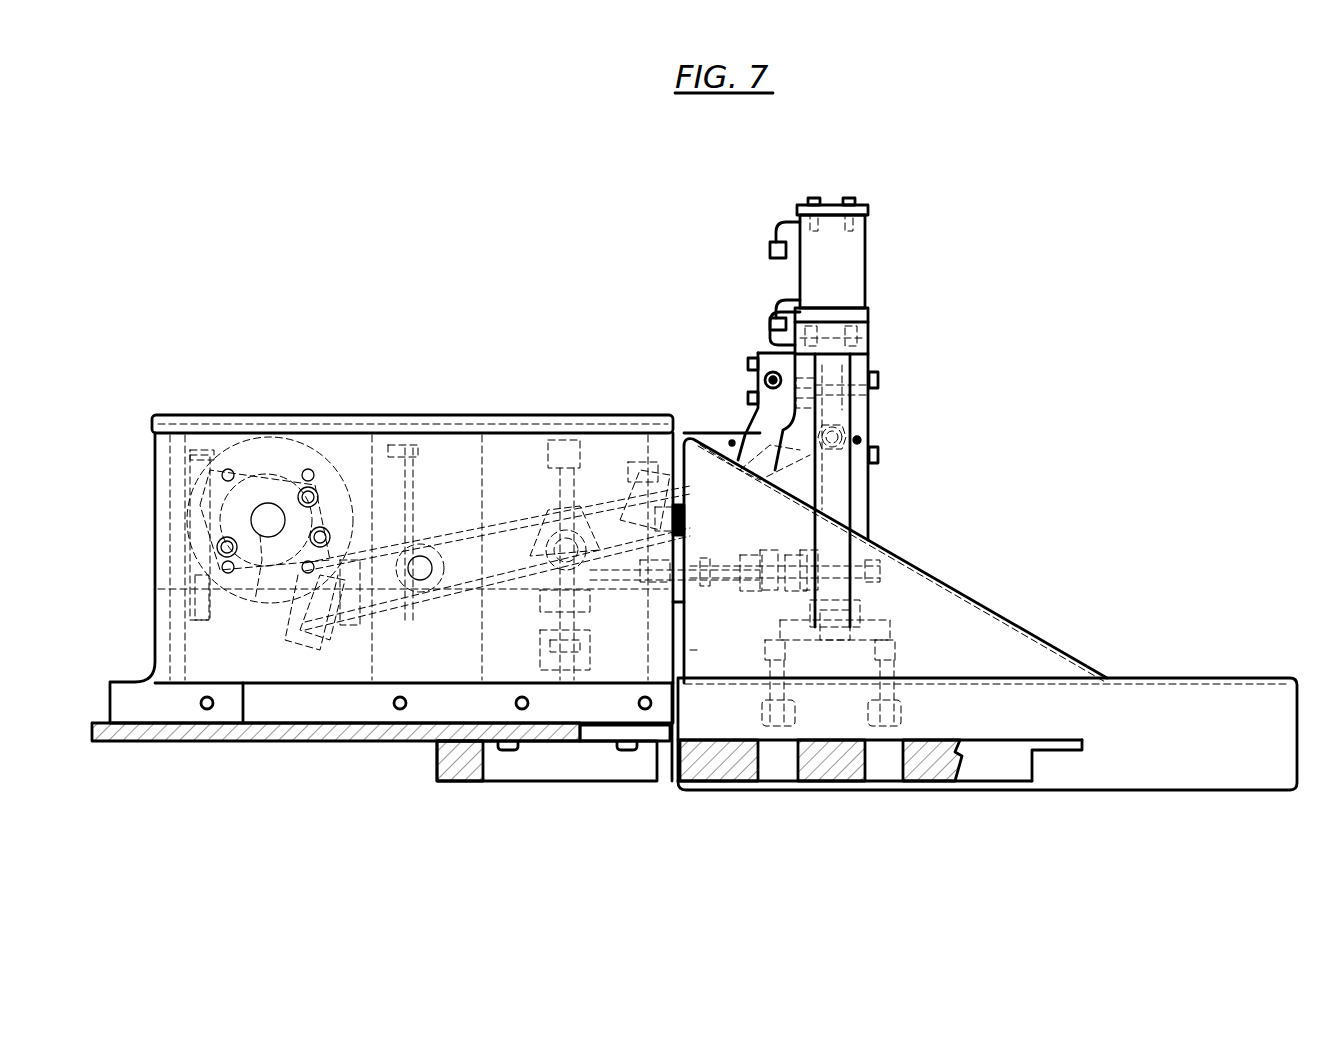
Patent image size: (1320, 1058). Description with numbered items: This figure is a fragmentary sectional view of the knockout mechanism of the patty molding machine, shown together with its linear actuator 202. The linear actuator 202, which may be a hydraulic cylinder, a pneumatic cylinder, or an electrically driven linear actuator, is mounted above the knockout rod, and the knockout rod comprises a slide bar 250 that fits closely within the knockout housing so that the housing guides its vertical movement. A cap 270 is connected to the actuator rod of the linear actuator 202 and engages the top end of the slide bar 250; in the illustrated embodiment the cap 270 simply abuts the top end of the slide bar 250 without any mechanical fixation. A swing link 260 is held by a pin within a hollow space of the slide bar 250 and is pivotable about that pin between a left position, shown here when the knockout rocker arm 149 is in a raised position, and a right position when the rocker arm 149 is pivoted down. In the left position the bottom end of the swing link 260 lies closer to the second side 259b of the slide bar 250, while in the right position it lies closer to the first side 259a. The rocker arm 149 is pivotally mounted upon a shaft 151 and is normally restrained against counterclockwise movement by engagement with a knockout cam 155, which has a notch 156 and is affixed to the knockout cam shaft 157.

The knockout rocker arm 149 is at (540, 508).
The shaft 151 is at (422, 553).
The knockout cam 155 is at (238, 462).
The notch 156 is at (310, 582).
The knockout cam shaft 157 is at (270, 515).
The linear actuator 202 is at (865, 228).
The slide bar 250 is at (852, 408).
The first side 259a is at (815, 538).
The second side 259b is at (850, 518).
The swing link 260 is at (842, 430).
The cap 270 is at (843, 358).